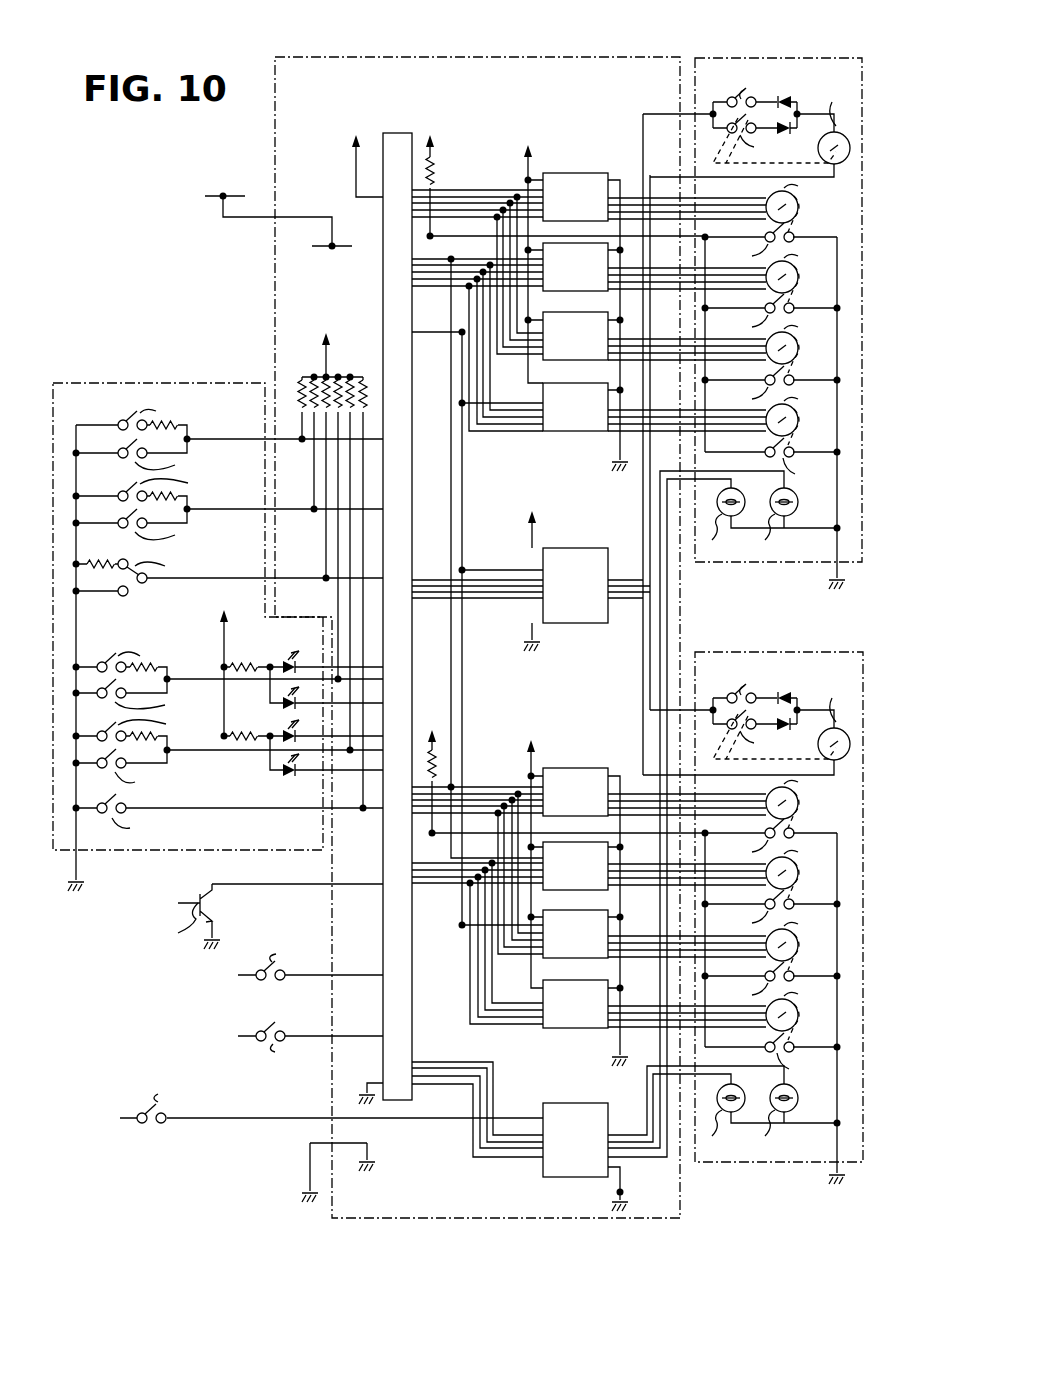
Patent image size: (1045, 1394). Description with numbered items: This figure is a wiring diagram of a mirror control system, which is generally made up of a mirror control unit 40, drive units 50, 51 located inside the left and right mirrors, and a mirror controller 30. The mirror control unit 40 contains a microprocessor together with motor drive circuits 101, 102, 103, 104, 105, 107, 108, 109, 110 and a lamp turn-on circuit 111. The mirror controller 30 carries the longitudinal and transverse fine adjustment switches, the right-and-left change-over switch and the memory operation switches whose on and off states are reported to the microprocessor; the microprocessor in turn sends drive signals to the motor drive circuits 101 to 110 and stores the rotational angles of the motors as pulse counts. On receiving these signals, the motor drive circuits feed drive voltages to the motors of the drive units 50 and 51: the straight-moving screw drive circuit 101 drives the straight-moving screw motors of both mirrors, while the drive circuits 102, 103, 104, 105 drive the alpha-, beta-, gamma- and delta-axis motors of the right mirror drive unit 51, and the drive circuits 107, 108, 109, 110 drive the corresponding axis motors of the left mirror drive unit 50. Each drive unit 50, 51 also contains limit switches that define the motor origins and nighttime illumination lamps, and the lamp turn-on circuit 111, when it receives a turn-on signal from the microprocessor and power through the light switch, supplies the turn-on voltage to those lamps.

The mirror controller 30 is at (180, 368).
The mirror control unit 40 is at (586, 47).
The drive unit 50 is at (760, 640).
The drive unit 51 is at (773, 45).
The motor drive circuit 101 is at (600, 599).
The motor drive circuit 102 is at (600, 211).
The motor drive circuit 103 is at (600, 281).
The motor drive circuit 104 is at (600, 350).
The motor drive circuit 105 is at (600, 421).
The motor drive circuit 107 is at (600, 806).
The motor drive circuit 108 is at (600, 880).
The motor drive circuit 109 is at (600, 948).
The motor drive circuit 110 is at (600, 1018).
The lamp turn-on circuit 111 is at (600, 1154).